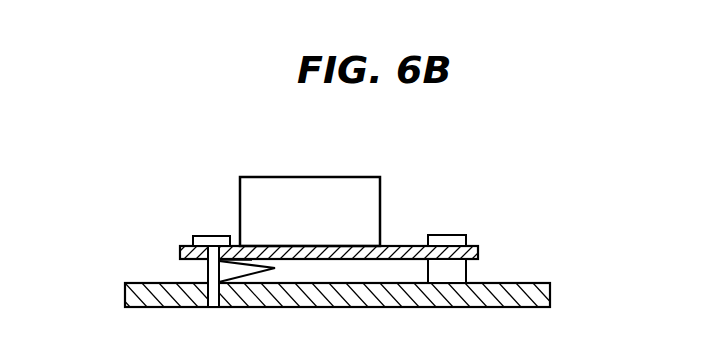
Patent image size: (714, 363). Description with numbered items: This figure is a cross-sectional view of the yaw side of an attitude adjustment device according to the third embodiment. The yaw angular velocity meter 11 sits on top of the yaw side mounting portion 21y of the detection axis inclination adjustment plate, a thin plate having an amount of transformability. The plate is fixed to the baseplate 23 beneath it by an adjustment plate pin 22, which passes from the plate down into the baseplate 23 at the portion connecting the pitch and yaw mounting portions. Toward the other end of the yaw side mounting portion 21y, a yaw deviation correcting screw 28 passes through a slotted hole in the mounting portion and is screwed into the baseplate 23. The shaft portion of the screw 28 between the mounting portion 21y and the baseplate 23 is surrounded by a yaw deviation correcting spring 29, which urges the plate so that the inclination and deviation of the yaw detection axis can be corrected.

The yaw angular velocity meter 11 is at (297, 177).
The yaw side mounting portion 21y is at (180, 248).
The adjustment plate pin 22 is at (440, 235).
The baseplate 23 is at (522, 282).
The yaw deviation correcting screw 28 is at (208, 235).
The yaw deviation correcting spring 29 is at (245, 307).